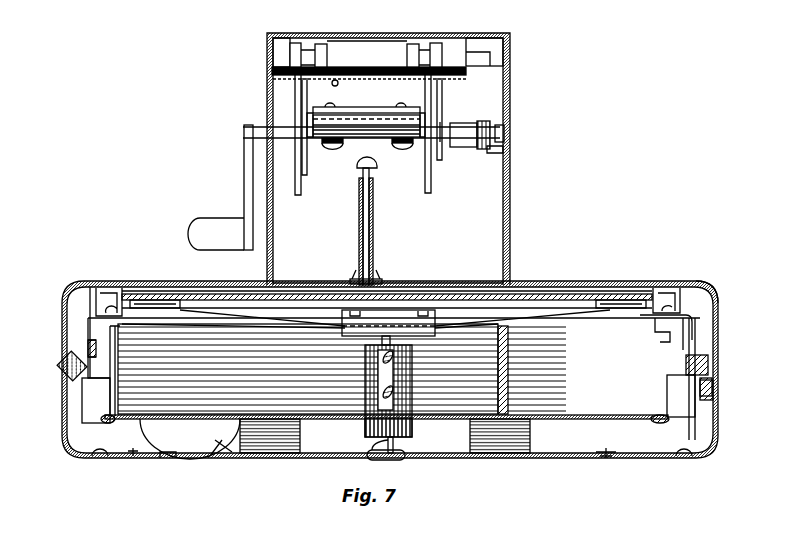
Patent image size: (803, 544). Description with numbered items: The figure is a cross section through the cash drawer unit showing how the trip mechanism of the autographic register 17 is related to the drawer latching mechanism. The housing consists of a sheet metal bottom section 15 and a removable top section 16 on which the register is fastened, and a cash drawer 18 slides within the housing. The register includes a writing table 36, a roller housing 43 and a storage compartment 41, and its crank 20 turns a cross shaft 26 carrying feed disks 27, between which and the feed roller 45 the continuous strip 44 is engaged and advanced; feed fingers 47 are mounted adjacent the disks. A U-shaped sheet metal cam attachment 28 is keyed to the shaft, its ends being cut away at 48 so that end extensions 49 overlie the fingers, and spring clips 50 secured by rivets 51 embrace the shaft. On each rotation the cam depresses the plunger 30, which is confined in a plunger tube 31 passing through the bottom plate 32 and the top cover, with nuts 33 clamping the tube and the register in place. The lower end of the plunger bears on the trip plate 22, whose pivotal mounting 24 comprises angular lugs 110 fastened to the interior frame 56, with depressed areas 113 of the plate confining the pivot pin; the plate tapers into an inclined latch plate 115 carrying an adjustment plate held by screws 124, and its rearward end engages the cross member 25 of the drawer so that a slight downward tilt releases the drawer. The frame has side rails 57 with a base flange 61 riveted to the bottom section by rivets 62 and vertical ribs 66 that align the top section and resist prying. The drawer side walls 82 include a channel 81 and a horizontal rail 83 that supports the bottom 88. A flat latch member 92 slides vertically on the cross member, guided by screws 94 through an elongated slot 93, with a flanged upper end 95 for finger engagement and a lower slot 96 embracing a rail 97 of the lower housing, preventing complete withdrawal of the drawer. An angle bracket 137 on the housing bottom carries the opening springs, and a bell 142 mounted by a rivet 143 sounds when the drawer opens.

The bottom section 15 is at (718, 428).
The removable top section 16 is at (100, 283).
The autographic register 17 is at (530, 50).
The cash drawer 18 is at (668, 354).
The crank 20 is at (244, 182).
The trip plate 22 is at (590, 284).
The pivotal mounting 24 is at (552, 296).
The cross member 25 is at (342, 369).
The cross shaft 26 is at (460, 140).
The feed disks 27 is at (302, 105).
The cam attachment 28 is at (372, 116).
The plunger 30 is at (376, 200).
The plunger tube 31 is at (374, 226).
The bottom plate 32 is at (478, 281).
The nuts 33 is at (376, 276).
The writing table 36 is at (376, 41).
The storage compartment 41 is at (488, 228).
The roller housing 43 is at (280, 48).
The continuous strip 44 is at (462, 55).
The feed roller 45 is at (296, 50).
The feed fingers 47 is at (295, 84).
The cut away ends 48 is at (332, 108).
The end extensions 49 is at (245, 130).
The spring clips 50 is at (322, 144).
The rivets 51 is at (336, 67).
The interior frame 56 is at (50, 375).
The side rails 57 is at (706, 288).
The base flange 61 is at (100, 456).
The rivets 62 is at (622, 437).
The vertical ribs 66 is at (710, 360).
The channel 81 is at (660, 340).
The side walls 82 is at (112, 400).
The horizontal rail 83 is at (112, 423).
The bottom 88 is at (256, 419).
The latch member 92 is at (383, 360).
The elongated slot 93 is at (383, 394).
The screws 94 is at (366, 437).
The flanged upper end 95 is at (387, 345).
The slot 96 is at (394, 440).
The rail 97 is at (372, 452).
The angular lugs 110 is at (96, 292).
The depressed areas 113 is at (152, 300).
The latch plate 115 is at (342, 322).
The screws 124 is at (428, 316).
The angle bracket 137 is at (518, 445).
The bell 142 is at (226, 452).
The rivet 143 is at (186, 456).